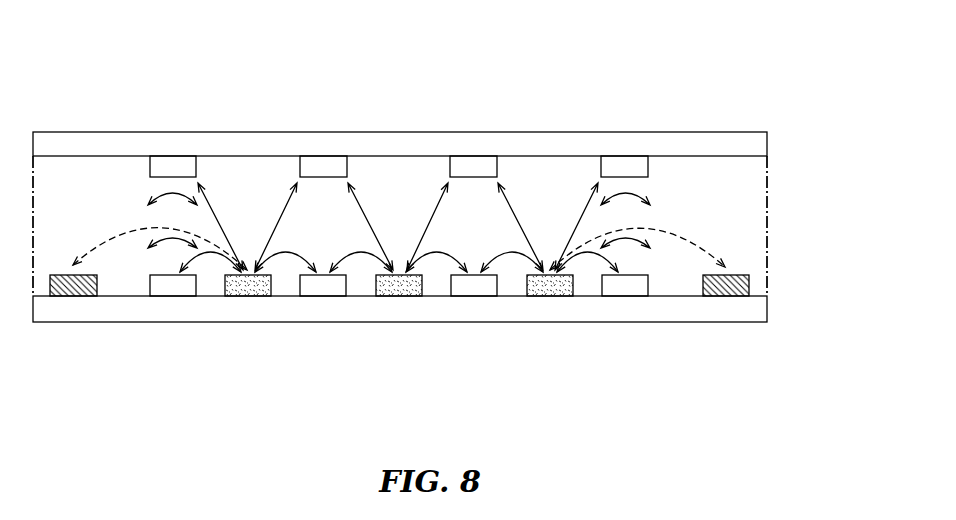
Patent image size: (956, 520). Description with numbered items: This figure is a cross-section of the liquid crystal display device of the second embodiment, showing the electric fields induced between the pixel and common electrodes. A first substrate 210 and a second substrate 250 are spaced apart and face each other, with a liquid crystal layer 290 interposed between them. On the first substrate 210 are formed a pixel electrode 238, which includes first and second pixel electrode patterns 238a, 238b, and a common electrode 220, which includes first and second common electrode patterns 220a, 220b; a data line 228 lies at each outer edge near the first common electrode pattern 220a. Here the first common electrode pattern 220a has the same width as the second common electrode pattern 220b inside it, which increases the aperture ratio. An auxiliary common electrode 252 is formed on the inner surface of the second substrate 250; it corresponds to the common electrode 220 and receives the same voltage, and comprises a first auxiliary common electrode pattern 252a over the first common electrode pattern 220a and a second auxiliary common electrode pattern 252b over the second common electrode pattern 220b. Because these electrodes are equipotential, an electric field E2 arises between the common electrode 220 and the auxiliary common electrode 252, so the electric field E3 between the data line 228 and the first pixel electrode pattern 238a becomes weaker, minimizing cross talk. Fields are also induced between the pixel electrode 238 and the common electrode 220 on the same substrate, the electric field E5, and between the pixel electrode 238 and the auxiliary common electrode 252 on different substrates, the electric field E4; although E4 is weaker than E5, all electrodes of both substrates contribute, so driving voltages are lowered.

The first substrate 210 is at (758, 308).
The common electrode 220 is at (399, 365).
The first common electrode pattern 220a is at (633, 347).
The second common electrode pattern 220b is at (398, 351).
The data line 228 is at (723, 347).
The pixel electrode 238 is at (399, 339).
The first pixel electrode pattern 238a is at (548, 333).
The second pixel electrode pattern 238b is at (402, 289).
The second substrate 250 is at (757, 144).
The auxiliary common electrode 252 is at (402, 99).
The first auxiliary common electrode pattern 252a is at (632, 165).
The second auxiliary common electrode pattern 252b is at (473, 165).
The liquid crystal layer 290 is at (758, 230).
The electric field E2 is at (168, 194).
The electric field E3 is at (112, 240).
The electric field E4 is at (224, 217).
The electric field E5 is at (284, 251).